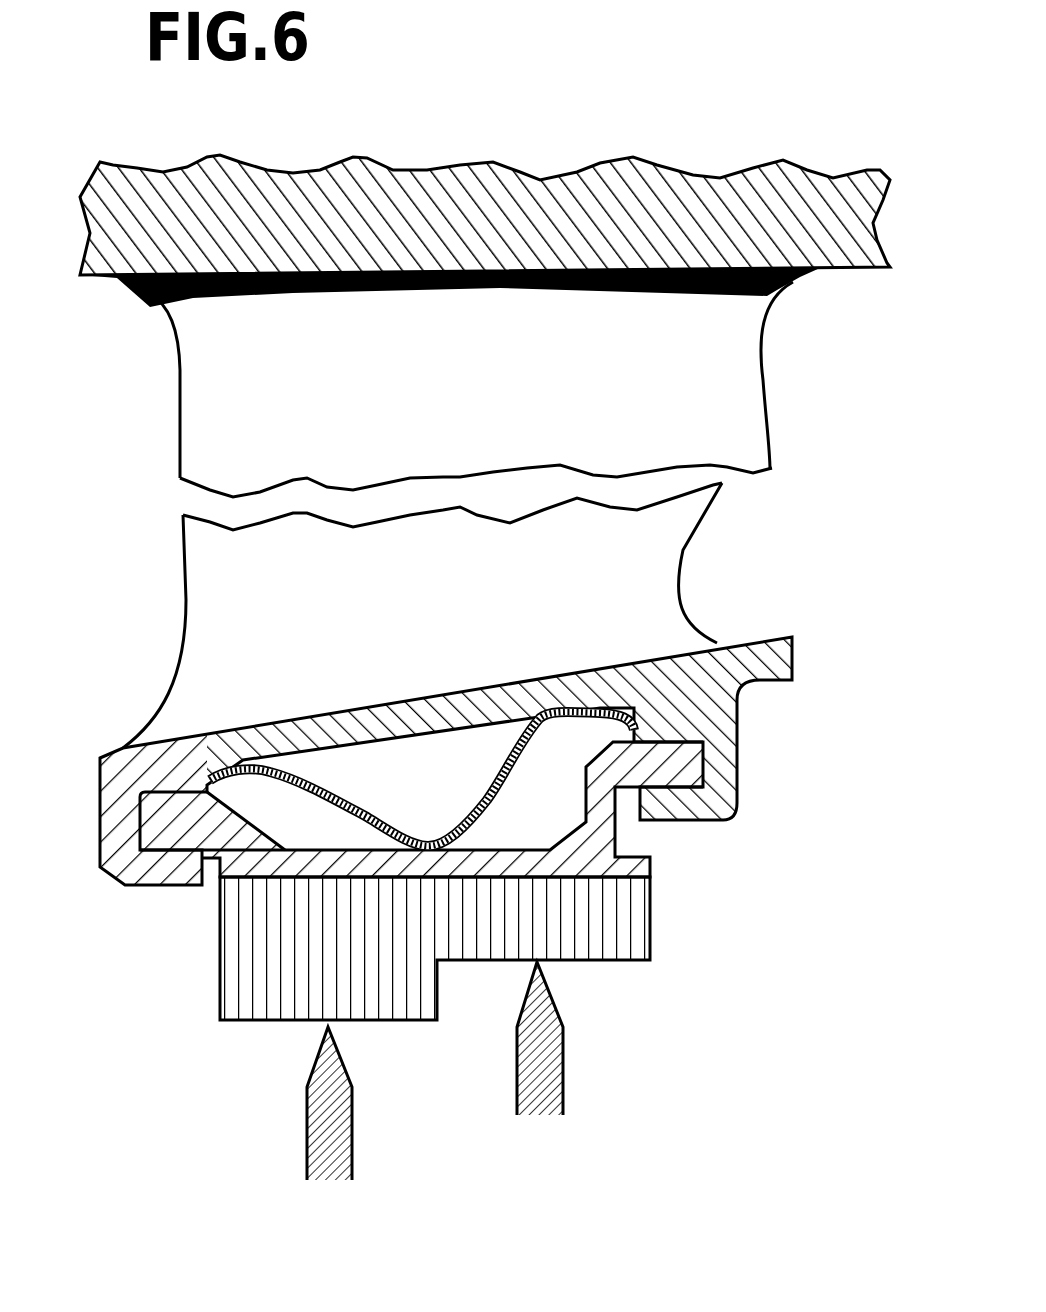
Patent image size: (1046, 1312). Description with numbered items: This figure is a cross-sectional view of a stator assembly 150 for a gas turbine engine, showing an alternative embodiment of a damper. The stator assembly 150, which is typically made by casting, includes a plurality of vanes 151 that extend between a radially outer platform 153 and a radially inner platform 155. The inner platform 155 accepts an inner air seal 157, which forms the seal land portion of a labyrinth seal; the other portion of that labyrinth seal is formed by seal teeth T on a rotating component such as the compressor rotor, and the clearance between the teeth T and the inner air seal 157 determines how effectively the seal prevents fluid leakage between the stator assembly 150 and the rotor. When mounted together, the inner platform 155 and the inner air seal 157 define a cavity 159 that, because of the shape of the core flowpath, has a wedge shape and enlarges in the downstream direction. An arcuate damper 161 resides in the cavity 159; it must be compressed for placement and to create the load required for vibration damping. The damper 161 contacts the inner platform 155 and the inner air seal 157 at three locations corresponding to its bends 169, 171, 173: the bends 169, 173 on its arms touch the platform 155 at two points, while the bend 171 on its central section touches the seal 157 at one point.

The stator assembly 150 is at (140, 495).
The vanes 151 is at (497, 462).
The radially outer platform 153 is at (380, 180).
The radially inner platform 155 is at (793, 668).
The inner air seal 157 is at (655, 862).
The cavity 159 is at (486, 734).
The arcuate damper 161 is at (355, 768).
The bend 169 is at (237, 738).
The bend 171 is at (413, 848).
The bend 173 is at (576, 700).
The seal teeth T is at (522, 1033).